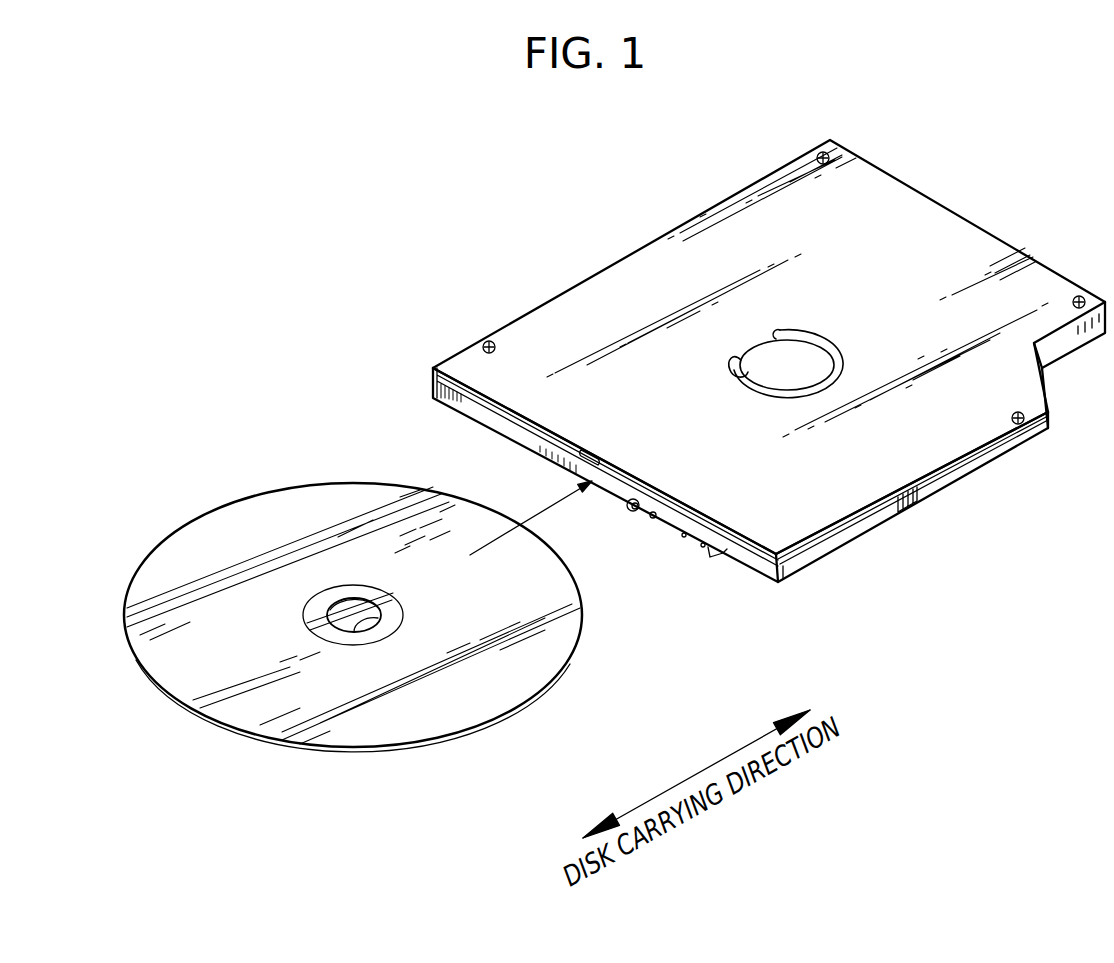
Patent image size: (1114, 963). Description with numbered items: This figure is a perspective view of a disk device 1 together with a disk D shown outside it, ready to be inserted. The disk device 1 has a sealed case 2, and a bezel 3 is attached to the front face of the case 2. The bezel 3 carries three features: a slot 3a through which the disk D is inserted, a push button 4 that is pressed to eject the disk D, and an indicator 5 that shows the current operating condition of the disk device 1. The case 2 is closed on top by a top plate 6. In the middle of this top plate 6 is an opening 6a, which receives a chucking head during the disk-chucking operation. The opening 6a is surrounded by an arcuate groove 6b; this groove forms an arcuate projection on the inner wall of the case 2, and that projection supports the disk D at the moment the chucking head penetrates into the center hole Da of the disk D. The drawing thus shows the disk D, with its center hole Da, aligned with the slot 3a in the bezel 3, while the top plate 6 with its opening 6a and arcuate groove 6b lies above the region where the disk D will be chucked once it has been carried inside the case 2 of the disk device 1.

The disk device 1 is at (927, 538).
The case 2 is at (955, 252).
The bezel 3 is at (495, 422).
The slot 3a is at (583, 451).
The push button 4 is at (632, 512).
The indicator 5 is at (653, 519).
The top plate 6 is at (655, 263).
The opening 6a is at (741, 371).
The arcuate groove 6b is at (827, 347).
The disk D is at (548, 668).
The center hole Da is at (403, 618).